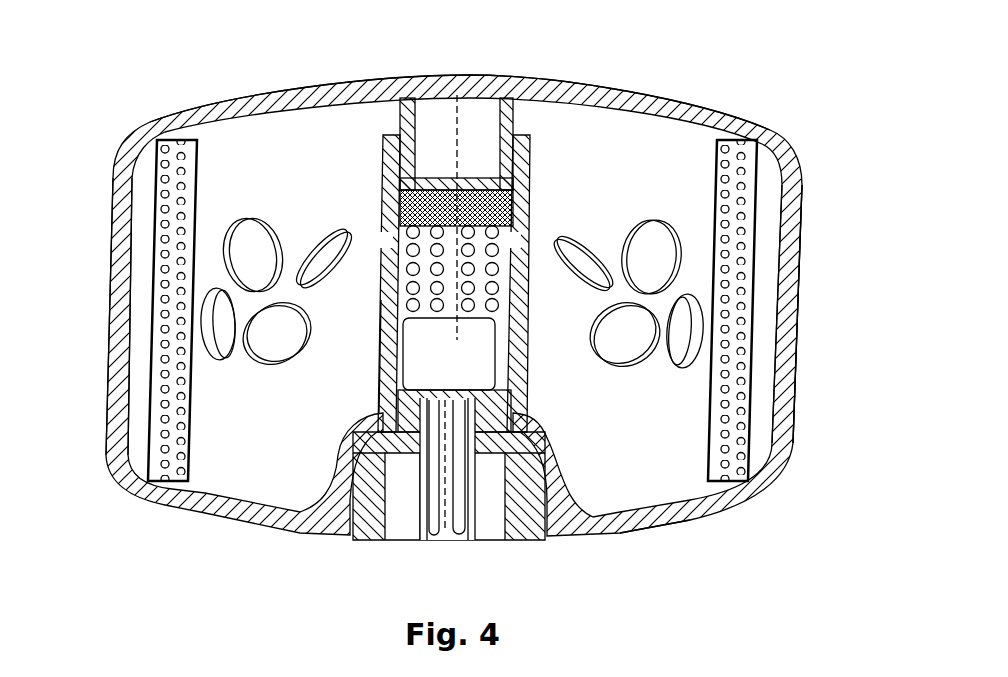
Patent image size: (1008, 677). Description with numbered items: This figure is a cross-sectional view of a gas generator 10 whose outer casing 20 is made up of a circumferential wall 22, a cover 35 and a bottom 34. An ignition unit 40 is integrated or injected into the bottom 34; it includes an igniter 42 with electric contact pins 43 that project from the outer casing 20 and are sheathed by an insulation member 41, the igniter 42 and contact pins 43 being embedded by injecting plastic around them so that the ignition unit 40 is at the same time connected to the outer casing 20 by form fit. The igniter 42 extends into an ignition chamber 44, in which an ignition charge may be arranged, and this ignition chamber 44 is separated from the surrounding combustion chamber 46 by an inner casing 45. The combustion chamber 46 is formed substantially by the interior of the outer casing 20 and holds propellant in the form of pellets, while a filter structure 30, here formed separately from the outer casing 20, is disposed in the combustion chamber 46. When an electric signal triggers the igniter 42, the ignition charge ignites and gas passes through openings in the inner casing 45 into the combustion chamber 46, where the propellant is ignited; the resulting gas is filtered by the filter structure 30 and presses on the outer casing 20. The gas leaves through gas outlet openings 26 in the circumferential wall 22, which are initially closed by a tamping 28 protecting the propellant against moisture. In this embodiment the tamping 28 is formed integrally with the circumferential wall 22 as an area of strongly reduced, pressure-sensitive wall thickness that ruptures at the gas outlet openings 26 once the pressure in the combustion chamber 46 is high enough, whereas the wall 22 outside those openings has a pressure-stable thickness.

The gas generator 10 is at (752, 53).
The outer casing 20 is at (723, 123).
The circumferential wall 22 is at (803, 190).
The gas outlet openings 26 is at (118, 273).
The tamping 28 is at (115, 293).
The filter structure 30 is at (198, 177).
The bottom 34 is at (667, 517).
The cover 35 is at (573, 83).
The ignition unit 40 is at (358, 392).
The insulation member 41 is at (543, 530).
The igniter 42 is at (470, 368).
The electric contact pins 43 is at (447, 540).
The ignition chamber 44 is at (458, 257).
The inner casing 45 is at (498, 362).
The combustion chamber 46 is at (335, 185).